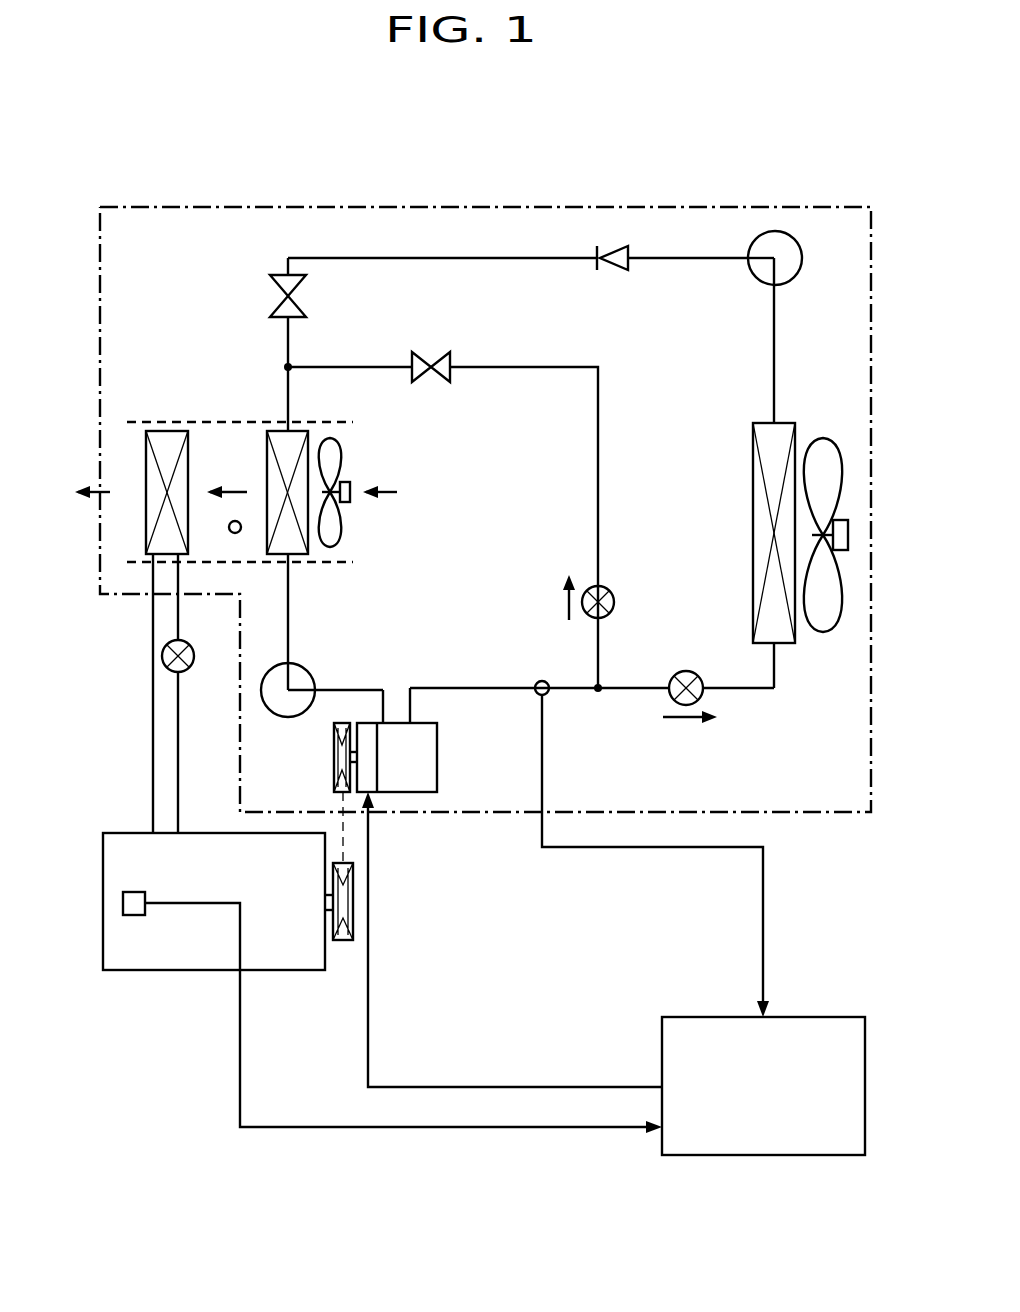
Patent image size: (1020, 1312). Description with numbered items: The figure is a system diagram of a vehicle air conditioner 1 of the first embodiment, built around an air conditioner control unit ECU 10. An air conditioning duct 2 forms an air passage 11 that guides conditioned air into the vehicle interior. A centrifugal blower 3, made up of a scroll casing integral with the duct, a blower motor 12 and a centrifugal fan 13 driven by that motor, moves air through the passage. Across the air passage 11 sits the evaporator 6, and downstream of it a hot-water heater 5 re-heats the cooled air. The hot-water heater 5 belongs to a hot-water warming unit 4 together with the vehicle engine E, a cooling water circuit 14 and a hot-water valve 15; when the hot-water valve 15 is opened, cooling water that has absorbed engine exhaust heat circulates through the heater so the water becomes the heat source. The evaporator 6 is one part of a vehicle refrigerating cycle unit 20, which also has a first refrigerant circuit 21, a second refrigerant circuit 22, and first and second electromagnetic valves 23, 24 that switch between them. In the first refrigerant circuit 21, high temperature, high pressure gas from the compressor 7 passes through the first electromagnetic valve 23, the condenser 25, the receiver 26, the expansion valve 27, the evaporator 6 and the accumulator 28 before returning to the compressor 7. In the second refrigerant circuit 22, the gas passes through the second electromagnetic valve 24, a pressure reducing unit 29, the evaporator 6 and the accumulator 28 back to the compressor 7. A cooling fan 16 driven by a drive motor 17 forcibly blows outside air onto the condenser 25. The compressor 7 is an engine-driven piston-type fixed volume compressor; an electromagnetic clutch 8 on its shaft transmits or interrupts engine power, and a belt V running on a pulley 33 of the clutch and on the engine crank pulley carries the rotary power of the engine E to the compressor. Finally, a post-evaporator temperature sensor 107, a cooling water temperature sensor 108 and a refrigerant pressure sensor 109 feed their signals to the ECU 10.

The vehicle air conditioner 1 is at (172, 206).
The air conditioning duct 2 is at (152, 425).
The centrifugal blower 3 is at (362, 470).
The hot-water warming unit 4 is at (142, 757).
The hot-water heater 5 is at (148, 530).
The evaporator 6 is at (275, 428).
The compressor 7 is at (428, 760).
The electromagnetic clutch 8 is at (365, 728).
The air conditioner control unit ECU 10 is at (700, 1017).
The air passage 11 is at (213, 445).
The blower motor 12 is at (350, 483).
The centrifugal fan 13 is at (337, 532).
The cooling water circuit 14 is at (153, 725).
The hot-water valve 15 is at (162, 655).
The cooling fan 16 is at (820, 438).
The drive motor 17 is at (848, 528).
The vehicle refrigerating cycle unit 20 is at (442, 195).
The first refrigerant circuit 21 is at (478, 257).
The second refrigerant circuit 22 is at (527, 365).
The first electromagnetic valve 23 is at (690, 672).
The second electromagnetic valve 24 is at (617, 600).
The condenser 25 is at (767, 430).
The receiver 26 is at (767, 272).
The expansion valve 27 is at (298, 288).
The accumulator 28 is at (295, 670).
The pressure reducing unit 29 is at (425, 352).
The pulley 33 is at (334, 757).
The post-evaporator temperature sensor 107 is at (237, 534).
The cooling water temperature sensor 108 is at (135, 912).
The refrigerant pressure sensor 109 is at (540, 680).
The vehicle engine E is at (185, 957).
The belt V is at (345, 840).